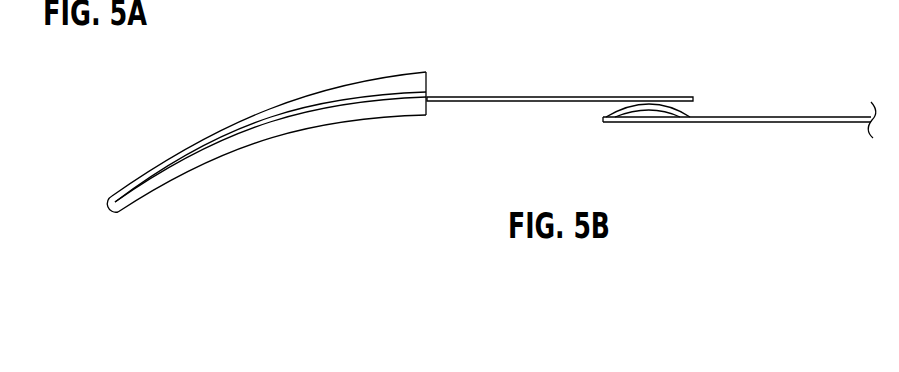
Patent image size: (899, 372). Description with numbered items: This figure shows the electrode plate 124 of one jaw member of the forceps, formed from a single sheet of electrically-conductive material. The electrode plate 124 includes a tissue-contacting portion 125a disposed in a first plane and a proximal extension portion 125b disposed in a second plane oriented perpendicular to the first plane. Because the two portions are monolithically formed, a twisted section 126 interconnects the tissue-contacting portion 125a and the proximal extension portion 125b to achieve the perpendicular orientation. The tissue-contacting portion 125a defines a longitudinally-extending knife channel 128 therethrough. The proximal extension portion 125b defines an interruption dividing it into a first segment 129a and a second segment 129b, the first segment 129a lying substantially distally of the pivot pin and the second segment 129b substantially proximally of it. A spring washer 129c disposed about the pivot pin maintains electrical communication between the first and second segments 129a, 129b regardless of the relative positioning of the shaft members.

The electrode plate 124 is at (307, 70).
The tissue-contacting portion 125a is at (272, 130).
The proximal extension portion 125b is at (830, 53).
The twisted section 126 is at (427, 105).
The knife channel 128 is at (215, 138).
The first segment 129a is at (520, 102).
The second segment 129b is at (808, 123).
The spring washer 129c is at (622, 113).